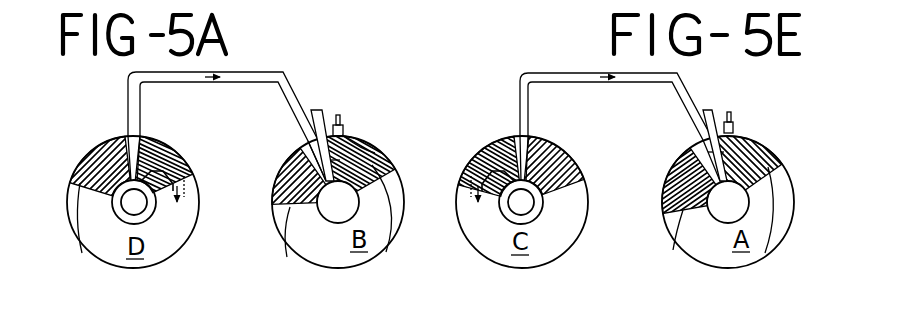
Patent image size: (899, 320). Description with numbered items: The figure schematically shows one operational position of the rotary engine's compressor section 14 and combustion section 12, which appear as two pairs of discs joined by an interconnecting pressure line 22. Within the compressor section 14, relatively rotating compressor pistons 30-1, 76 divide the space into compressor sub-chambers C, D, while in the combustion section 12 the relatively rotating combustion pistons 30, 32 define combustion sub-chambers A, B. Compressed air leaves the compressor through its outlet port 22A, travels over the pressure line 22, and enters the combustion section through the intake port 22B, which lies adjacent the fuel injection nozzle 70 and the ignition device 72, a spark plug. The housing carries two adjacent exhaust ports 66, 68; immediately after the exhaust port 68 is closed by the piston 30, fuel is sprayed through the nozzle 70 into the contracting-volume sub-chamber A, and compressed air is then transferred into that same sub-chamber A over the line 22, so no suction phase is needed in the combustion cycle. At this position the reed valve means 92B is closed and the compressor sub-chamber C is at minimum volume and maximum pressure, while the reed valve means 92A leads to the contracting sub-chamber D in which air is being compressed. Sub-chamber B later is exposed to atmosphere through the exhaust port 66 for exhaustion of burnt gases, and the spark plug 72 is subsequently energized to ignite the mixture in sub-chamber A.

In FIG. 5A, the combustion section 12 is at (365, 73).
In FIG. 5E, the combustion section 12 is at (770, 103).
In FIG. 5A, the compressor section 14 is at (79, 96).
In FIG. 5E, the compressor section 14 is at (497, 77).
In FIG. 5A, the pressure line 22 is at (283, 72).
In FIG. 5E, the pressure line 22 is at (556, 72).
In FIG. 5A, the outlet port 22A is at (128, 134).
In FIG. 5E, the outlet port 22A is at (519, 136).
In FIG. 5A, the intake port 22B is at (311, 128).
In FIG. 5A, the combustion piston 30 is at (283, 238).
In FIG. 5E, the combustion piston 30 is at (766, 262).
In FIG. 5A, the compressor piston 30-1 is at (84, 250).
In FIG. 5E, the compressor piston 30-1 is at (540, 136).
In FIG. 5A, the combustion piston 32 is at (392, 238).
In FIG. 5E, the combustion piston 32 is at (673, 248).
In FIG. 5A, the exhaust port 66 is at (272, 163).
In FIG. 5E, the exhaust port 66 is at (656, 172).
In FIG. 5A, the exhaust port 68 is at (290, 140).
In FIG. 5E, the exhaust port 68 is at (681, 150).
In FIG. 5A, the fuel injection nozzle 70 is at (298, 140).
In FIG. 5E, the fuel injection nozzle 70 is at (690, 140).
In FIG. 5A, the ignition device 72 is at (348, 120).
In FIG. 5E, the ignition device 72 is at (727, 112).
In FIG. 5A, the compressor piston 76 is at (157, 138).
In FIG. 5E, the compressor piston 76 is at (492, 147).
In FIG. 5A, the reed valve means 92A is at (205, 196).
In FIG. 5E, the reed valve means 92A is at (462, 200).
In FIG. 5A, the reed valve means 92B is at (101, 146).
In FIG. 5E, the reed valve means 92B is at (473, 160).
In FIG. 5A, the combustion sub-chamber A is at (368, 147).
In FIG. 5E, the combustion sub-chamber B is at (752, 140).
In FIG. 5A, the compressor sub-chamber C is at (118, 136).
In FIG. 5E, the compressor sub-chamber D is at (506, 136).